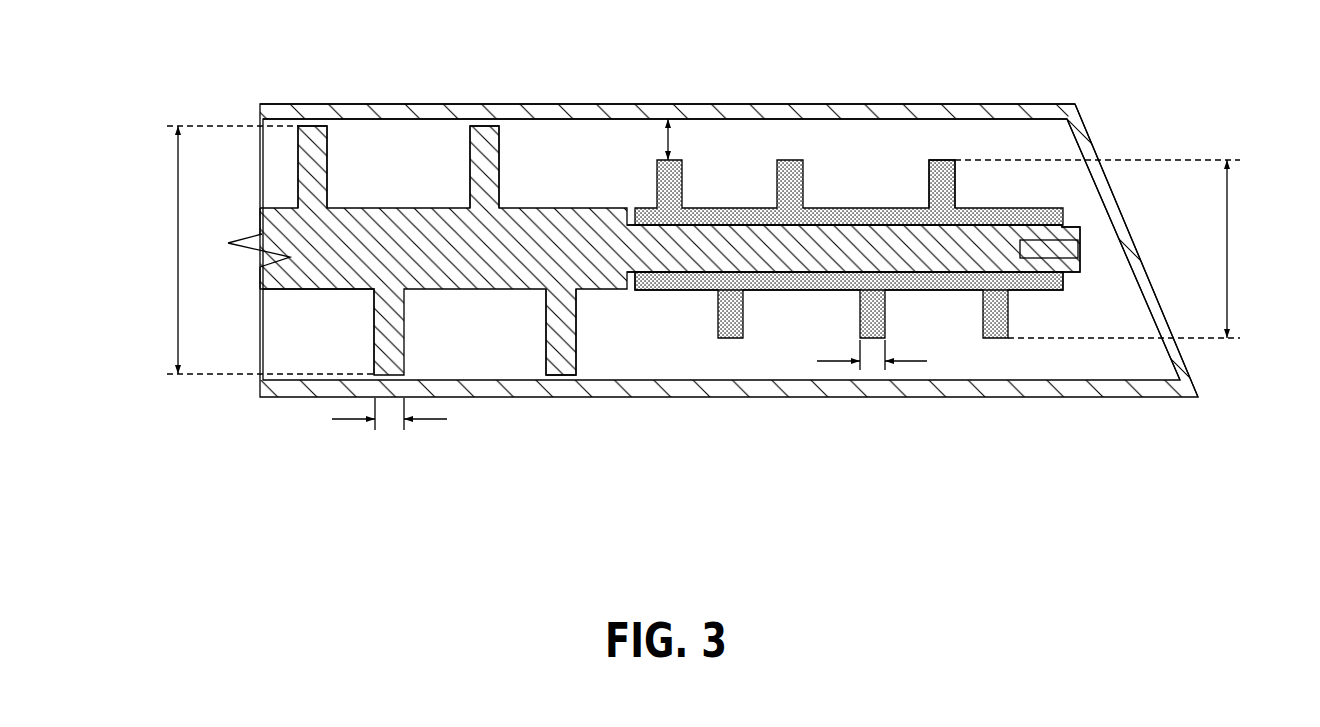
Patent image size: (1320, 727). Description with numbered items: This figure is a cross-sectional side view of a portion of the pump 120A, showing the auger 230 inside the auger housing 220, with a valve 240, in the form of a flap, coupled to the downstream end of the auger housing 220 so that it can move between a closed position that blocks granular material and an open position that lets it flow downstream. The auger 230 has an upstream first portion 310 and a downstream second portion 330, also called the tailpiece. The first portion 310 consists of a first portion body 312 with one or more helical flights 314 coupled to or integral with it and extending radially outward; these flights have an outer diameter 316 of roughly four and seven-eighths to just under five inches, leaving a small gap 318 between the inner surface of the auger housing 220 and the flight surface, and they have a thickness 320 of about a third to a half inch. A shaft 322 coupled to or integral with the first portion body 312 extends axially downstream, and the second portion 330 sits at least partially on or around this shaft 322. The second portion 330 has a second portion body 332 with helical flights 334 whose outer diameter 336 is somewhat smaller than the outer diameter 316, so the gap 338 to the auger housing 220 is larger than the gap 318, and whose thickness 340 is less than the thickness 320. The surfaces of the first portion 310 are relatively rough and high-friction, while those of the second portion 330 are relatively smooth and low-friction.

The pump 120A is at (718, 42).
The auger housing 220 is at (297, 103).
The valve 240 is at (1090, 133).
The auger 230 is at (583, 180).
The first portion 310 is at (628, 477).
The first portion body 312 is at (322, 292).
The flight 314 is at (327, 150).
The outer diameter 316 is at (178, 250).
The gap 318 is at (484, 126).
The thickness 320 is at (437, 420).
The shaft 322 is at (702, 243).
The second portion 330 is at (633, 477).
The second portion body 332 is at (802, 291).
The flight 334 is at (928, 190).
The outer diameter 336 is at (1227, 248).
The gap 338 is at (668, 140).
The thickness 340 is at (911, 362).